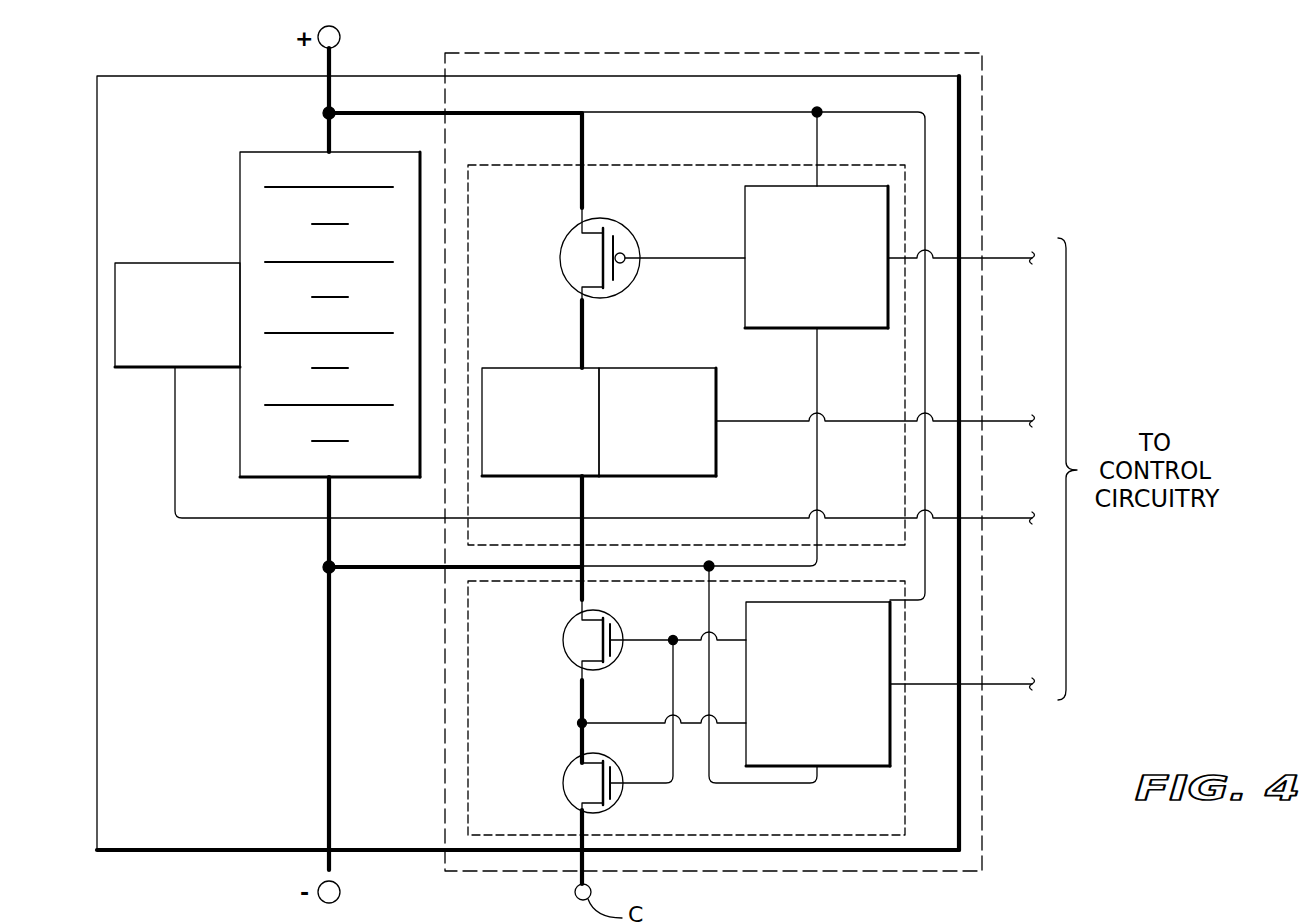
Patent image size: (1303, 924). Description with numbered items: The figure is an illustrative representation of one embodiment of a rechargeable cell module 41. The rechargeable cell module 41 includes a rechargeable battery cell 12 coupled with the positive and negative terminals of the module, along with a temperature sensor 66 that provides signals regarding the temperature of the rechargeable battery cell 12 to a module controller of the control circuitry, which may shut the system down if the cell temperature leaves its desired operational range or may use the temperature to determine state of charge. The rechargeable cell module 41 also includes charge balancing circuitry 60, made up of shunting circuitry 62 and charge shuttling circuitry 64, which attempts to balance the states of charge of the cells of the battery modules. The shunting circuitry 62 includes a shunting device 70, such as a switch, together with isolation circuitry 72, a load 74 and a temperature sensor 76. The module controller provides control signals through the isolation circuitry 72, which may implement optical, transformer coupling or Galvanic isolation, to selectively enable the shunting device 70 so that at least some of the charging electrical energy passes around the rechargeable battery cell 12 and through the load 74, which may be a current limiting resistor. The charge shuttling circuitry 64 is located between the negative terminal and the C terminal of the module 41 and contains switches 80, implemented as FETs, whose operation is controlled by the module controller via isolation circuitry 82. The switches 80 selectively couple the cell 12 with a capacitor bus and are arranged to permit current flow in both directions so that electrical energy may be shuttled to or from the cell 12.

The rechargeable battery cell 12 is at (240, 190).
The rechargeable cell module 41 is at (97, 638).
The charge balancing circuitry 60 is at (982, 117).
The shunting circuitry 62 is at (905, 206).
The charge shuttling circuitry 64 is at (905, 786).
The temperature sensor 66 is at (115, 315).
The shunting device 70 is at (620, 225).
The isolation circuitry 72 is at (745, 215).
The load 74 is at (556, 368).
The temperature sensor 76 is at (658, 368).
The switches 80 is at (564, 640).
The isolation circuitry 82 is at (860, 768).